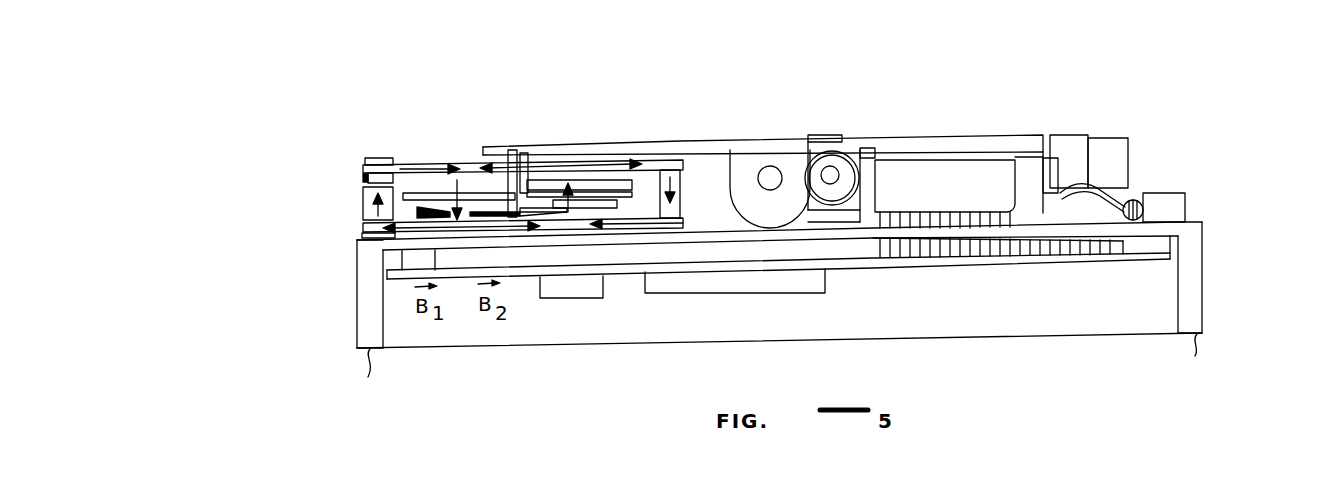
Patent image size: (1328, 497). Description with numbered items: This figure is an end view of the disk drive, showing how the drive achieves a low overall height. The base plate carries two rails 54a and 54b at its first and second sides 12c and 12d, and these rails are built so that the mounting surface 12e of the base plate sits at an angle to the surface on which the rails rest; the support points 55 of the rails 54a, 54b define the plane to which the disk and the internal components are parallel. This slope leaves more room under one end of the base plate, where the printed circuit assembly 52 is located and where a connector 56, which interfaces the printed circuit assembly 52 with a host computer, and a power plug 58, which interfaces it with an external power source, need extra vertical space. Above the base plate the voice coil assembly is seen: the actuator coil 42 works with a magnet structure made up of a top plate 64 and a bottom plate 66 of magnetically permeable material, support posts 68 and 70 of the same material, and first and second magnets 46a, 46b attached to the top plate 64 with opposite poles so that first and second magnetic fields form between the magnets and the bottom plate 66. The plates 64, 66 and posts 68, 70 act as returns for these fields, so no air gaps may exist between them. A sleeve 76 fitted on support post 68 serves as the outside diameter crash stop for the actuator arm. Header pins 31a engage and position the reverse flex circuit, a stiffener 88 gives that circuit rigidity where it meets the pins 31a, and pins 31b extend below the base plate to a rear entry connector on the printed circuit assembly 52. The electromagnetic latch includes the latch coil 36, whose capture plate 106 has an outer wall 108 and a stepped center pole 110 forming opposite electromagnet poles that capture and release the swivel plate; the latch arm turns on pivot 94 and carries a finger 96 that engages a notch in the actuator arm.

The first side 12c is at (364, 262).
The second side 12d is at (1200, 231).
The mounting surface 12e is at (760, 238).
The pins 31a is at (887, 215).
The pins 31b is at (880, 253).
The latch coil 36 is at (838, 218).
The actuator coil 42 is at (555, 290).
The first magnet 46a is at (425, 187).
The second magnet 46b is at (603, 183).
The printed circuit assembly 52 is at (623, 272).
The rail 54a is at (363, 336).
The rail 54b is at (1190, 315).
The support points 55 is at (784, 369).
The connector 56 is at (713, 287).
The power plug 58 is at (570, 200).
The top plate 64 is at (362, 167).
The bottom plate 66 is at (362, 231).
The support post 68 is at (366, 178).
The support post 70 is at (681, 192).
The sleeve 76 is at (362, 203).
The stiffener 88 is at (996, 156).
The pivot 94 is at (681, 150).
The finger 96 is at (533, 170).
The capture plate 106 is at (826, 140).
The outer wall 108 is at (833, 172).
The center pole 110 is at (801, 150).